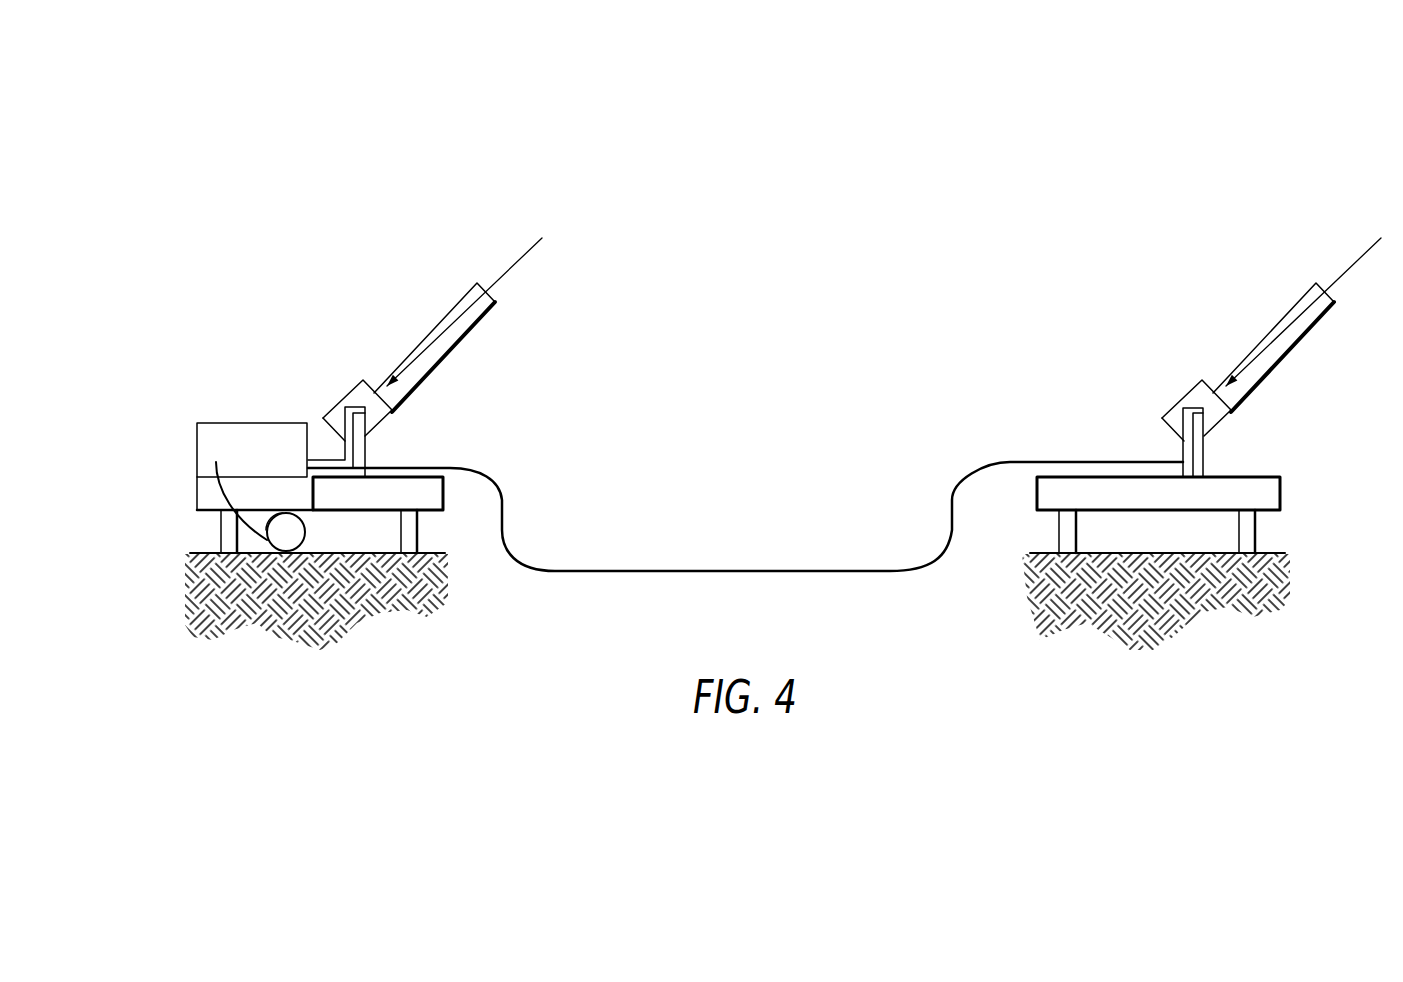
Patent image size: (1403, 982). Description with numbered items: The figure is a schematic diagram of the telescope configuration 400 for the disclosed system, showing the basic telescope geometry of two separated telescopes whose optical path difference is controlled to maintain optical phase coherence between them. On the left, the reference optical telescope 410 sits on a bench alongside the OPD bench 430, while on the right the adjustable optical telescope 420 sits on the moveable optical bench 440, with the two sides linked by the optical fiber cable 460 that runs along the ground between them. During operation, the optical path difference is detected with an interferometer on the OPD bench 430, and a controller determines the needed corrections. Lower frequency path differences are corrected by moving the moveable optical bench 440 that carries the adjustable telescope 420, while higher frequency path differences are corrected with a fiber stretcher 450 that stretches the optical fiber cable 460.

The telescope configuration 400 is at (636, 155).
The reference optical telescope 410 is at (338, 383).
The adjustable optical telescope 420 is at (1167, 379).
The OPD bench 430 is at (217, 428).
The moveable optical bench 440 is at (1037, 493).
The fiber stretcher 450 is at (247, 543).
The optical fiber cable 460 is at (728, 571).